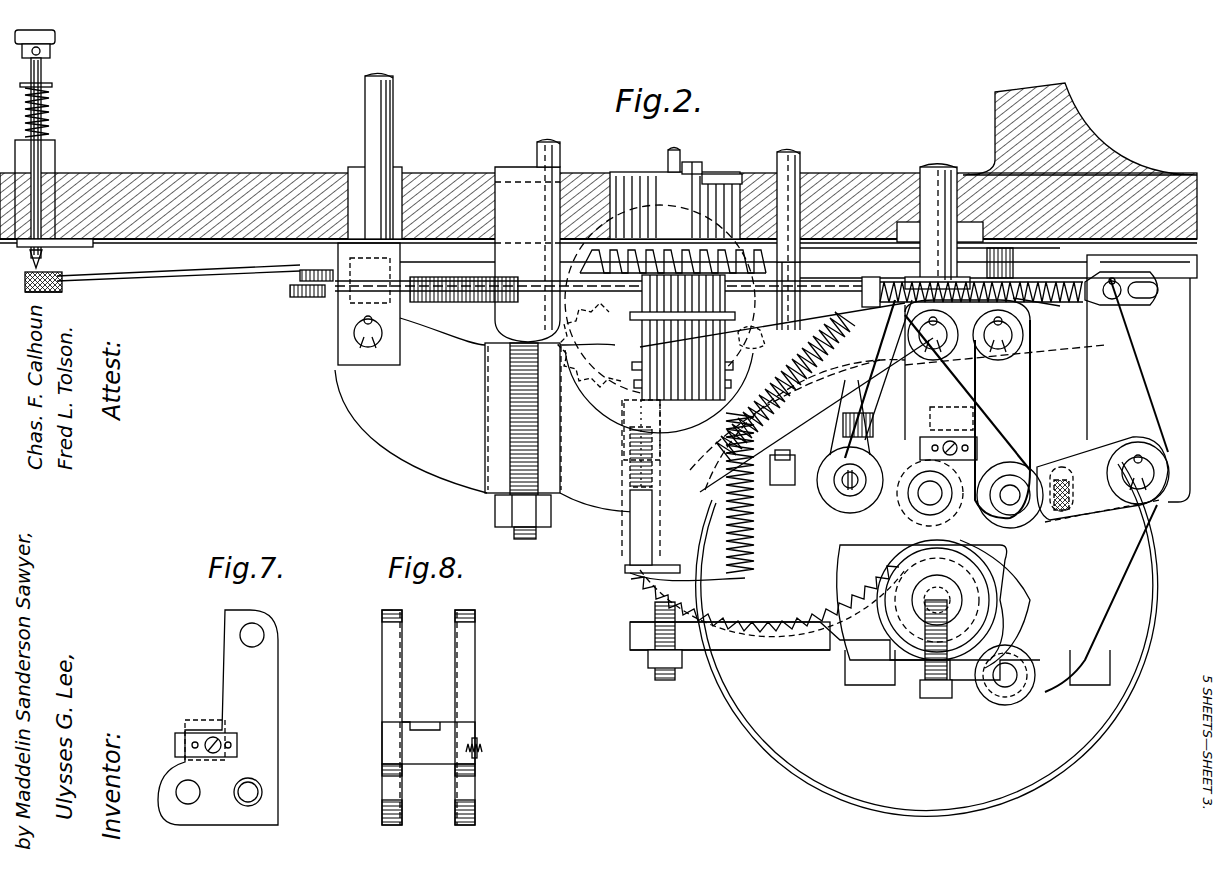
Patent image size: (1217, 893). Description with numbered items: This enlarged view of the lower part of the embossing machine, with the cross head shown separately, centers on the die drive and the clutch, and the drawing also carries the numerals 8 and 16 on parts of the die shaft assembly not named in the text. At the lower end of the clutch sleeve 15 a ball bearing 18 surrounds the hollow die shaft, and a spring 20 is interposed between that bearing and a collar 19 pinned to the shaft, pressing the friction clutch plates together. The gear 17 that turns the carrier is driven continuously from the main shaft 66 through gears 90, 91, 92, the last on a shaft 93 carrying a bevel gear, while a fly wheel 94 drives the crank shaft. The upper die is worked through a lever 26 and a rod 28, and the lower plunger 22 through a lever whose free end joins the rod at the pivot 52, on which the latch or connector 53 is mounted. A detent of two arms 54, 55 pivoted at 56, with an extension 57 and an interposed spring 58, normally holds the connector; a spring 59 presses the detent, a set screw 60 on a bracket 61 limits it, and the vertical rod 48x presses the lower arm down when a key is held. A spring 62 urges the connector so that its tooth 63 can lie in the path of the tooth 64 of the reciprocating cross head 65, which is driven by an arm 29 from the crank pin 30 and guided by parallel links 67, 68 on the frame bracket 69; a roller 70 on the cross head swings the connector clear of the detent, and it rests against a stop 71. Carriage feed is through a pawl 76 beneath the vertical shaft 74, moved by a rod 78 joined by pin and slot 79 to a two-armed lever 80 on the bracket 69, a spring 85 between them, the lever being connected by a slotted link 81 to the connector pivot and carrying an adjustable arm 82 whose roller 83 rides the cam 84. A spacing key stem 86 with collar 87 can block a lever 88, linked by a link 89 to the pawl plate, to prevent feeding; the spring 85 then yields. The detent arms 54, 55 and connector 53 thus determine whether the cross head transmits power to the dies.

In FIG. 2, the bevel gear 8 is at (702, 168).
In FIG. 2, the clutch sleeve 15 is at (712, 176).
In FIG. 2, the column 16 is at (628, 195).
In FIG. 2, the gear 17 is at (800, 262).
In FIG. 2, the ball bearing 18 is at (690, 348).
In FIG. 2, the collar 19 is at (630, 490).
In FIG. 2, the spring 20 is at (624, 460).
In FIG. 2, the lower plunger 22 is at (527, 240).
In FIG. 2, the lever 26 is at (410, 435).
In FIG. 2, the link or rod 28 is at (926, 172).
In FIG. 2, the arm or link 29 is at (1000, 560).
In FIG. 2, the crank pin 30 is at (885, 640).
In FIG. 2, the vertical rod 48x is at (615, 568).
In FIG. 2, the pivot 52 is at (1010, 285).
In FIG. 2, the latch or connector 53 is at (865, 295).
In FIG. 2, the detent lever arm 54 is at (870, 312).
In FIG. 2, the detent lever arm 55 is at (790, 575).
In FIG. 2, the pivot 56 is at (795, 478).
In FIG. 2, the extension 57 is at (868, 500).
In FIG. 2, the spring 58 is at (843, 428).
In FIG. 2, the spring 59 is at (754, 515).
In FIG. 2, the set screw 60 is at (655, 610).
In FIG. 2, the bracket 61 is at (640, 635).
In FIG. 2, the spring 62 is at (825, 355).
In FIG. 2, the tooth 63 is at (925, 388).
In FIG. 2, the tooth 64 is at (945, 420).
In FIG. 7, the tooth 64 is at (190, 722).
In FIG. 2, the cross head 65 is at (1010, 413).
In FIG. 7, the cross head 65 is at (260, 695).
In FIG. 8, the cross head 65 is at (465, 682).
In FIG. 2, the main shaft 66 is at (1030, 610).
In FIG. 2, the parallel link 67 is at (1058, 348).
In FIG. 2, the parallel link 68 is at (1100, 515).
In FIG. 2, the frame bracket 69 is at (1138, 390).
In FIG. 2, the roller 70 is at (940, 482).
In FIG. 2, the stop 71 is at (960, 445).
In FIG. 7, the stop 71 is at (175, 745).
In FIG. 8, the stop 71 is at (480, 748).
In FIG. 2, the vertical shaft 74 is at (393, 148).
In FIG. 2, the pawl 76 is at (318, 297).
In FIG. 2, the rod 78 is at (580, 292).
In FIG. 2, the pin and slot connection 79 is at (1115, 281).
In FIG. 2, the two-armed lever 80 is at (1125, 397).
In FIG. 2, the link 81 is at (963, 403).
In FIG. 2, the arm 82 is at (1073, 660).
In FIG. 2, the roller 83 is at (1005, 705).
In FIG. 2, the cam 84 is at (990, 610).
In FIG. 2, the spring 85 is at (1030, 300).
In FIG. 2, the key stem 86 is at (45, 158).
In FIG. 2, the collar 87 is at (48, 250).
In FIG. 2, the lever 88 is at (50, 292).
In FIG. 2, the link 89 is at (172, 272).
In FIG. 2, the gear 90 is at (630, 535).
In FIG. 2, the gear 91 is at (765, 345).
In FIG. 2, the gear 92 is at (612, 328).
In FIG. 2, the shaft 93 is at (640, 366).
In FIG. 2, the fly wheel 94 is at (764, 742).